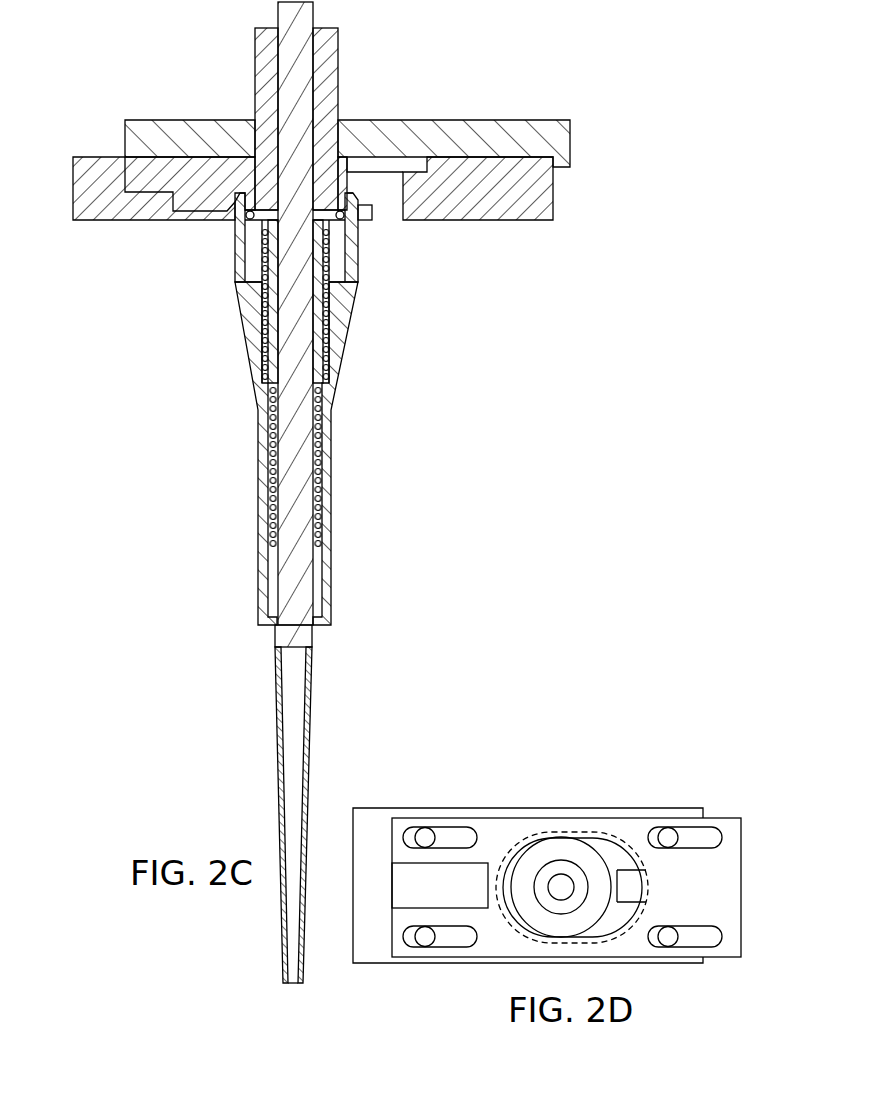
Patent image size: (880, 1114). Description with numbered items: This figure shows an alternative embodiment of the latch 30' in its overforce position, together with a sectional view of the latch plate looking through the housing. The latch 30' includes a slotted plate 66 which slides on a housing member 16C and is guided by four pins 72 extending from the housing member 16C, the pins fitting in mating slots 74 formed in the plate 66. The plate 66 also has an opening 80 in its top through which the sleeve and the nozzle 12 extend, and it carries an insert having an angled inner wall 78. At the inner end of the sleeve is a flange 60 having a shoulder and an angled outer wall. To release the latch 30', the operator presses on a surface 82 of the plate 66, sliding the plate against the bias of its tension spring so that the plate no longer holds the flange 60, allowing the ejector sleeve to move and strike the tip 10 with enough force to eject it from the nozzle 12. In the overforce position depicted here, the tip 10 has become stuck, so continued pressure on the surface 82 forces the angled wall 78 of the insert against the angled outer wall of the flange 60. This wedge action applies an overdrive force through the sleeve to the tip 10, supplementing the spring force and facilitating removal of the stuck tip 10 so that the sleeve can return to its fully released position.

In FIG. 2C, the latch 30' is at (182, 313).
In FIG. 2C, the housing member 16C is at (172, 120).
In FIG. 2D, the housing member 16C is at (367, 808).
In FIG. 2C, the surface 82 is at (73, 186).
In FIG. 2C, the slotted plate 66 is at (118, 221).
In FIG. 2D, the slotted plate 66 is at (742, 892).
In FIG. 2C, the flange 60 is at (356, 197).
In FIG. 2C, the nozzle 12 is at (282, 630).
In FIG. 2C, the tip 10 is at (292, 719).
In FIG. 2D, the slots 74 is at (462, 835).
In FIG. 2D, the pins 72 is at (668, 829).
In FIG. 2D, the opening 80 is at (597, 833).
In FIG. 2D, the angled inner wall 78 is at (623, 878).